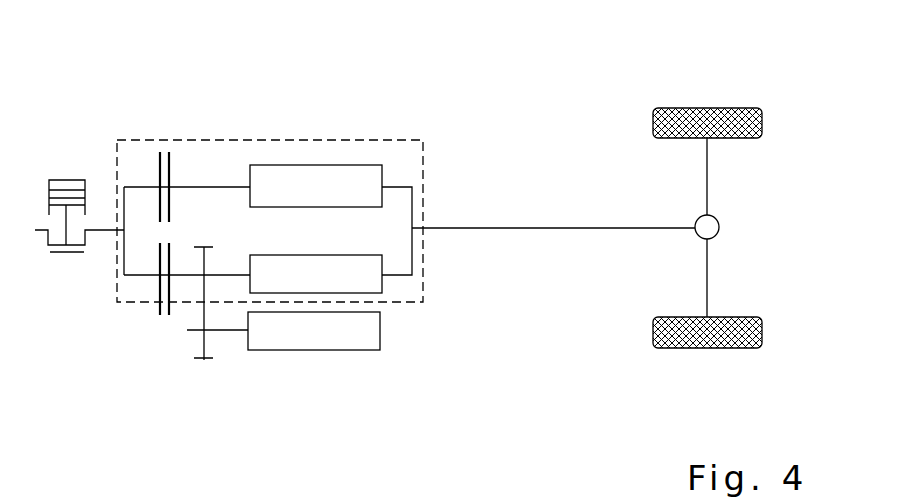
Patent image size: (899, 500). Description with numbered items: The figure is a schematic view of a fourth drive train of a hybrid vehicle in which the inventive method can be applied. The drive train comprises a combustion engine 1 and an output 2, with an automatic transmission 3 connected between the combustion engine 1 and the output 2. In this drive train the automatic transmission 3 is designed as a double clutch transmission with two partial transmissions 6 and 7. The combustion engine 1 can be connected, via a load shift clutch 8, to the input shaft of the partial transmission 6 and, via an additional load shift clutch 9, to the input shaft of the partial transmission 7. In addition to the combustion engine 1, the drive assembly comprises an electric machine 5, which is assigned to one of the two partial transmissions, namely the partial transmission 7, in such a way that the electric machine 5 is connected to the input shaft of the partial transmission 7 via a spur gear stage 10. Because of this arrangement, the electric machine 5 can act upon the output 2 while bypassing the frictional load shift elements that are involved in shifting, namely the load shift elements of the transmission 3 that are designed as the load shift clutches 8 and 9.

The combustion engine 1 is at (69, 172).
The output 2 is at (709, 106).
The automatic transmission 3 is at (358, 140).
The electric machine 5 is at (367, 343).
The partial transmission 6 is at (290, 165).
The partial transmission 7 is at (288, 293).
The load shift clutch 8 is at (166, 158).
The load shift clutch 9 is at (159, 310).
The spur gear stage 10 is at (204, 363).